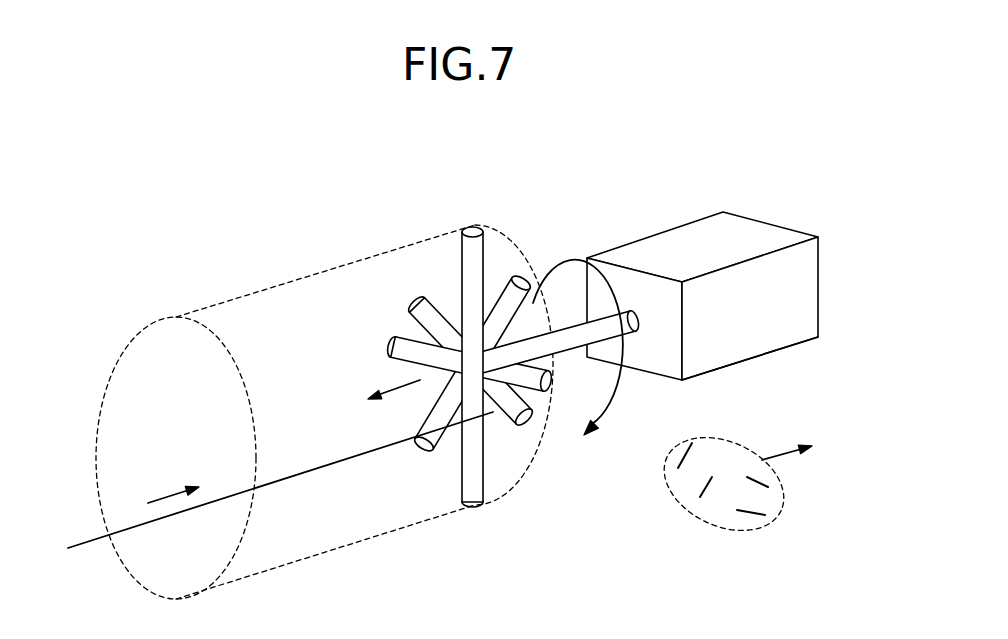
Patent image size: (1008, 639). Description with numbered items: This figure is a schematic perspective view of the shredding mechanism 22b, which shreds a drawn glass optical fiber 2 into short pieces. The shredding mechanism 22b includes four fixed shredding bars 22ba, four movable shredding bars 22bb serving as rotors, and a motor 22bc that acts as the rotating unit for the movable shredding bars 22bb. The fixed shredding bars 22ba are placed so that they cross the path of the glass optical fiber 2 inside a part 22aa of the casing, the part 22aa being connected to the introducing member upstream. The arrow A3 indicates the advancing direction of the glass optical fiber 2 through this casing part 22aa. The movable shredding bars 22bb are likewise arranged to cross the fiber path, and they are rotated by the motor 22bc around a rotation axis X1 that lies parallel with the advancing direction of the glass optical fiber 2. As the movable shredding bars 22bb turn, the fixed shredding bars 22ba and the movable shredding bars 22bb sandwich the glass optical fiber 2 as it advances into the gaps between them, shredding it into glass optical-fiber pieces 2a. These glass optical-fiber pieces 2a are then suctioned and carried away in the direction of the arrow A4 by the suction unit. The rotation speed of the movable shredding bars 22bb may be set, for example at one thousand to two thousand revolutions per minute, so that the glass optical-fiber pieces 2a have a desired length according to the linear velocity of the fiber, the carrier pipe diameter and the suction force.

The glass optical fiber 2 is at (82, 545).
The glass optical-fiber pieces 2a is at (757, 533).
The part of the casing 22aa is at (352, 256).
The shredding mechanism 22b is at (659, 198).
The fixed shredding bars 22ba is at (458, 257).
The movable shredding bars 22bb is at (505, 422).
The motor 22bc is at (797, 346).
The arrow indicating advancing direction A3 is at (173, 485).
The arrow indicating suction direction A4 is at (771, 460).
The rotation axis X1 is at (393, 388).